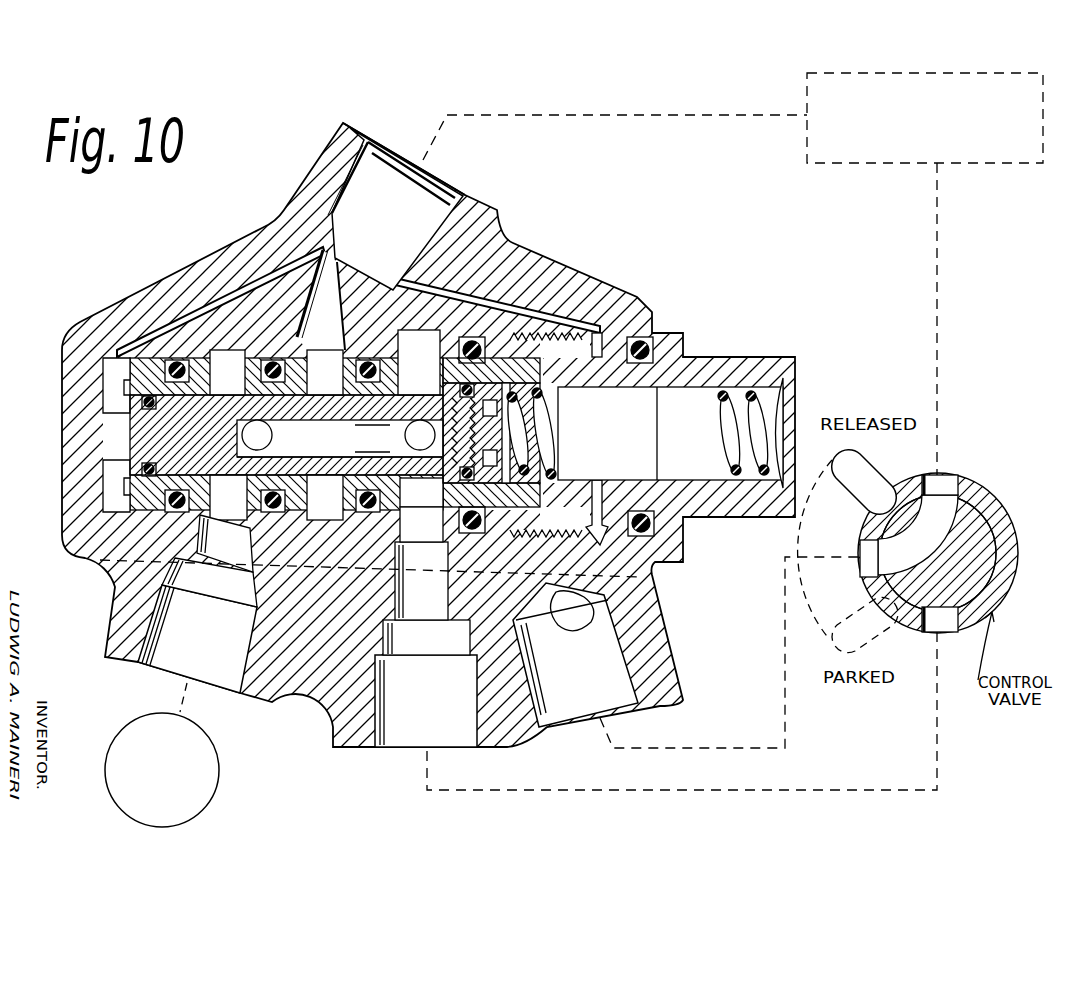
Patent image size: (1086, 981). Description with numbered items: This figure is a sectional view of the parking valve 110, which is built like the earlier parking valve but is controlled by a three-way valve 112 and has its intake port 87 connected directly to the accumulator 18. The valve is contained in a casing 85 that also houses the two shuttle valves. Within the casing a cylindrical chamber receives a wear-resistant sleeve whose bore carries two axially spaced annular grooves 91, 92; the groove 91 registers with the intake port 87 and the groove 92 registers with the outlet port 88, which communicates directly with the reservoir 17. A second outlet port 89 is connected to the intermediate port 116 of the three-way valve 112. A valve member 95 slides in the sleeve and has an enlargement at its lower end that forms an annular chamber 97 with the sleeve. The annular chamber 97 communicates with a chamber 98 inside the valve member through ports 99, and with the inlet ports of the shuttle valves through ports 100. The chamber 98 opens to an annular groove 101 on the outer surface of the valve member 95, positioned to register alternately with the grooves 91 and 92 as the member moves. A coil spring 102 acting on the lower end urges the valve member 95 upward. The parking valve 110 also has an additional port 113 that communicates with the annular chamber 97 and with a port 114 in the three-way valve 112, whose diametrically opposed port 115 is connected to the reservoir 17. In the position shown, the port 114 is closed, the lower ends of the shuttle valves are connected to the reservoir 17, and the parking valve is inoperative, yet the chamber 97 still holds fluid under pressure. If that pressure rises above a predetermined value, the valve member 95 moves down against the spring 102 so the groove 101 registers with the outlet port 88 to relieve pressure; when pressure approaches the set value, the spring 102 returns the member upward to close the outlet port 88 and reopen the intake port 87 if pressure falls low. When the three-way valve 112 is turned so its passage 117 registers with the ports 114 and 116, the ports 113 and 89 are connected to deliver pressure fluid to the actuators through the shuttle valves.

The reservoir 17 is at (958, 73).
The accumulator 18 is at (226, 742).
The casing 85 is at (492, 241).
The intake port 87 is at (177, 657).
The outlet port 88 is at (428, 208).
The outlet port 89 is at (570, 620).
The annular groove 91 is at (203, 567).
The annular groove 92 is at (318, 484).
The valve member 95 is at (132, 433).
The annular chamber 97 is at (413, 480).
The chamber 98 is at (372, 438).
The ports 99 is at (268, 434).
The ports 100 is at (410, 545).
The annular groove 101 is at (265, 468).
The coil spring 102 is at (733, 385).
The parking valve 110 is at (711, 334).
The three-way valve 112 is at (1000, 520).
The port 113 is at (418, 713).
The port 114 is at (950, 616).
The port 115 is at (942, 488).
The port 116 is at (852, 560).
The passage 117 is at (948, 520).